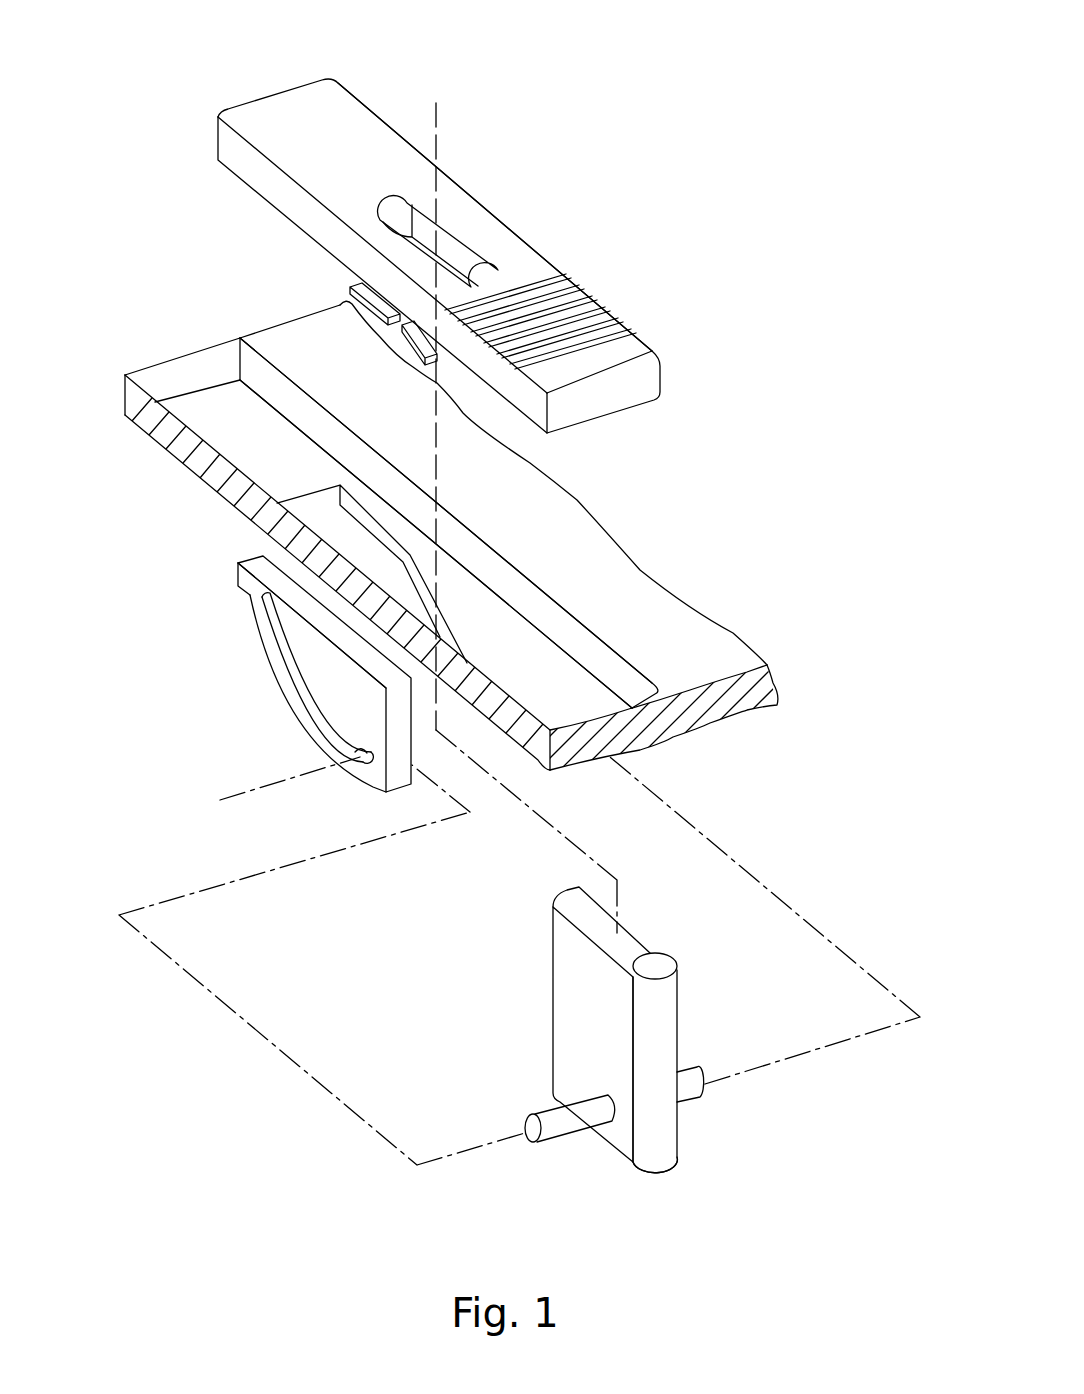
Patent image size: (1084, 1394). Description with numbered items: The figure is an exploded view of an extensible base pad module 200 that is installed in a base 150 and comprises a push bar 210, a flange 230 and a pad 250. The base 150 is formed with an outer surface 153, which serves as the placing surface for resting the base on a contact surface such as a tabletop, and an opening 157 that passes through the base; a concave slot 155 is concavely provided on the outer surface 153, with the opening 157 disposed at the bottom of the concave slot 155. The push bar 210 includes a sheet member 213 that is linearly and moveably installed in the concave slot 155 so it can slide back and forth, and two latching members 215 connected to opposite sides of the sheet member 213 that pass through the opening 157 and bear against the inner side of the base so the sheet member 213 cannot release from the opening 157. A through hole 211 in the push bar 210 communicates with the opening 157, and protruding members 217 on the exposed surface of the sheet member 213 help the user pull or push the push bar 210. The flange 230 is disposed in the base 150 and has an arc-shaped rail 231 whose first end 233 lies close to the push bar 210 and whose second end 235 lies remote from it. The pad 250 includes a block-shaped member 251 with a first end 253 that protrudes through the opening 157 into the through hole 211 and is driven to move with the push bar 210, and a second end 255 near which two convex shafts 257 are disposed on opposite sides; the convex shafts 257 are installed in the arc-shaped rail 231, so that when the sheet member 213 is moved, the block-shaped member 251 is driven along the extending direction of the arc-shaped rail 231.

The extensible base pad module 200 is at (745, 185).
The push bar 210 is at (435, 225).
The through hole 211 is at (483, 262).
The sheet member 213 is at (348, 95).
The latching members 215 is at (352, 290).
The protruding members 217 is at (607, 306).
The base 150 is at (455, 550).
The outer surface 153 is at (640, 573).
The concave slot 155 is at (215, 432).
The opening 157 is at (342, 537).
The flange 230 is at (282, 674).
The arc-shaped rail 231 is at (316, 703).
The first end 233 is at (262, 600).
The second end 235 is at (357, 754).
The pad 250 is at (660, 1062).
The block-shaped member 251 is at (663, 1135).
The first end 253 is at (632, 940).
The second end 255 is at (645, 1163).
The convex shafts 257 is at (558, 1127).